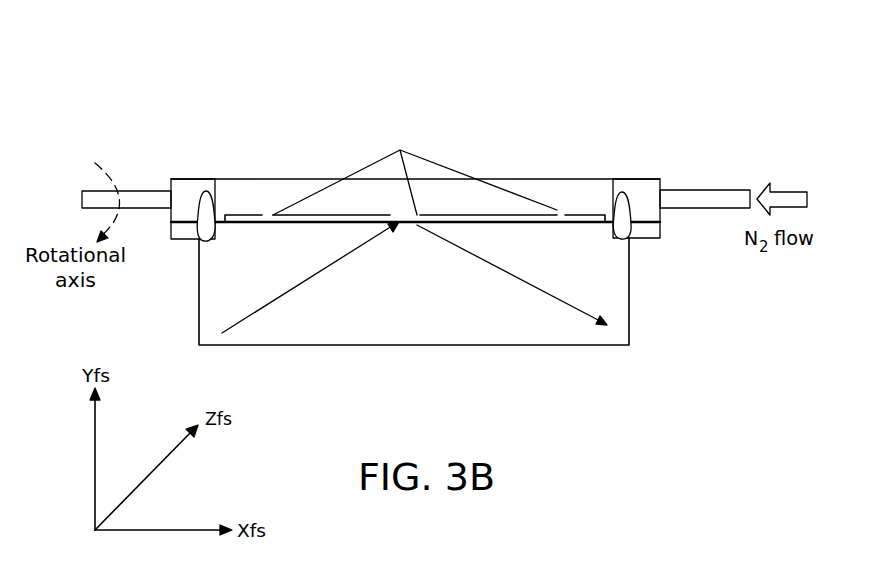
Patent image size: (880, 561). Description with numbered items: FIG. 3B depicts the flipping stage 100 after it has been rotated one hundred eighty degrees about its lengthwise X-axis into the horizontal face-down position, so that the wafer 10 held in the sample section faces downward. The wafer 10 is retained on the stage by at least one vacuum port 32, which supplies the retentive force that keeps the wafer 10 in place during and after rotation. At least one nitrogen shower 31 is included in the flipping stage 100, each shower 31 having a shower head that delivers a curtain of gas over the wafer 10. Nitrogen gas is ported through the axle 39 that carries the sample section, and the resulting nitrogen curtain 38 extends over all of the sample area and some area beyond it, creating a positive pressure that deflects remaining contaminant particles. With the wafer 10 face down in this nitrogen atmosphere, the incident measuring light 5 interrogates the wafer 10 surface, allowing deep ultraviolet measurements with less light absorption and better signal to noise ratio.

The flipping stage 100 is at (782, 96).
The axle 39 is at (687, 195).
The shower 31 is at (205, 200).
The vacuum port 32 is at (415, 169).
The wafer 10 is at (601, 224).
The nitrogen curtain 38 is at (445, 313).
The measuring light 5 is at (318, 277).